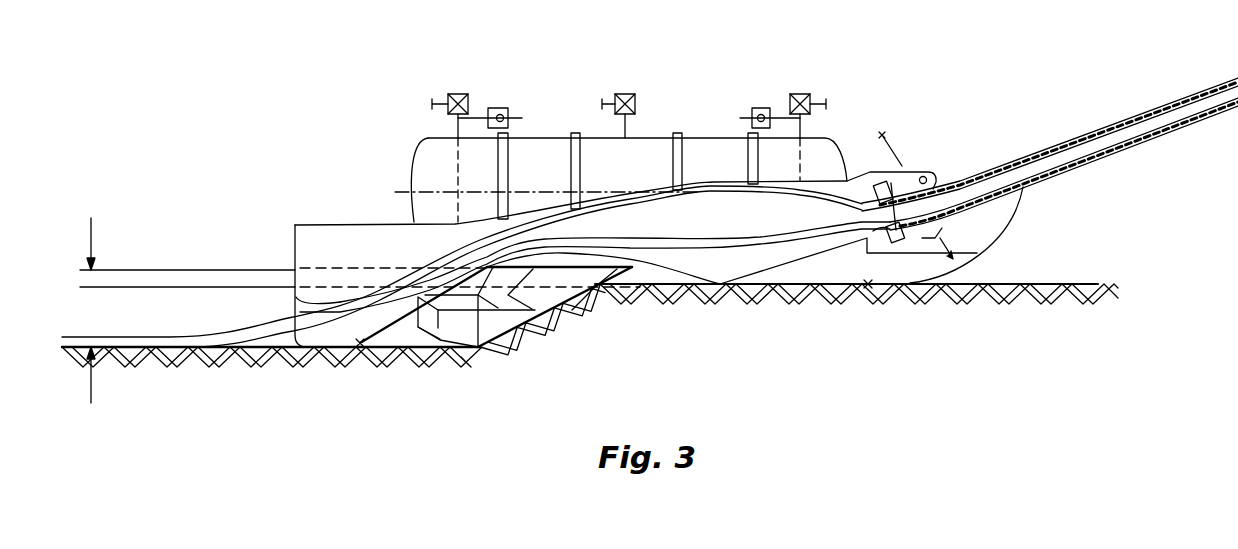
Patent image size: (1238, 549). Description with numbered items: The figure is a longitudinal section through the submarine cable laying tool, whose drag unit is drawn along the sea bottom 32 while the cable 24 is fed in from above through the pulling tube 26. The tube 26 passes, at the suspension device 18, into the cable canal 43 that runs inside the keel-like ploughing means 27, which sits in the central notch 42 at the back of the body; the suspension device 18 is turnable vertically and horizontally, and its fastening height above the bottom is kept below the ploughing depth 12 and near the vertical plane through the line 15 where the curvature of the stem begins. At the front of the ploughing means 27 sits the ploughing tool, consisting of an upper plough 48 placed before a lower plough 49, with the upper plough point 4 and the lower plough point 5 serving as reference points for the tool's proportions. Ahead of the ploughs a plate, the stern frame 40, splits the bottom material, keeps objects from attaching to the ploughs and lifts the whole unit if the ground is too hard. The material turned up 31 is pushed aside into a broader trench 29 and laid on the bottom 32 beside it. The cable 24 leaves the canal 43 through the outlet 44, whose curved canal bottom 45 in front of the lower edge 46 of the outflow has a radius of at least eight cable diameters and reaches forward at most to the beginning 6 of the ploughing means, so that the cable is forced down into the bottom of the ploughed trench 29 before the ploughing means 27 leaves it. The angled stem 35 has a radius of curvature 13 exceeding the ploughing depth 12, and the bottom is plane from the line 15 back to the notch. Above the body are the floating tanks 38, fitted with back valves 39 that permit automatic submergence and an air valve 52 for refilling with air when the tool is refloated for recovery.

The point of the upper plough 4 is at (538, 290).
The point of the lower plough 5 is at (477, 349).
The beginning of the ploughing means 6 is at (630, 272).
The ploughing depth 12 is at (102, 300).
The radius of curvature 13 is at (922, 238).
The beginning of the curvature 15 is at (868, 286).
The suspension device 18 is at (908, 190).
The cable 24 is at (1083, 138).
The pulling tube 26 is at (1083, 158).
The ploughing means 27 is at (398, 322).
The ploughed trench 29 is at (242, 303).
The material turned up 31 is at (180, 280).
The bottom 32 is at (1030, 320).
The stem 35 is at (1003, 232).
The floating tanks 38 is at (713, 150).
The back valves 39 is at (452, 90).
The stern frame 40 is at (560, 295).
The central notch 42 is at (680, 285).
The canal 43 is at (752, 259).
The outlet 44 is at (322, 333).
The bottom of the canal 45 is at (563, 252).
The lower edge of the outflow 46 is at (360, 343).
The upper plough 48 is at (512, 311).
The lower plough 49 is at (443, 333).
The air valve 52 is at (623, 92).